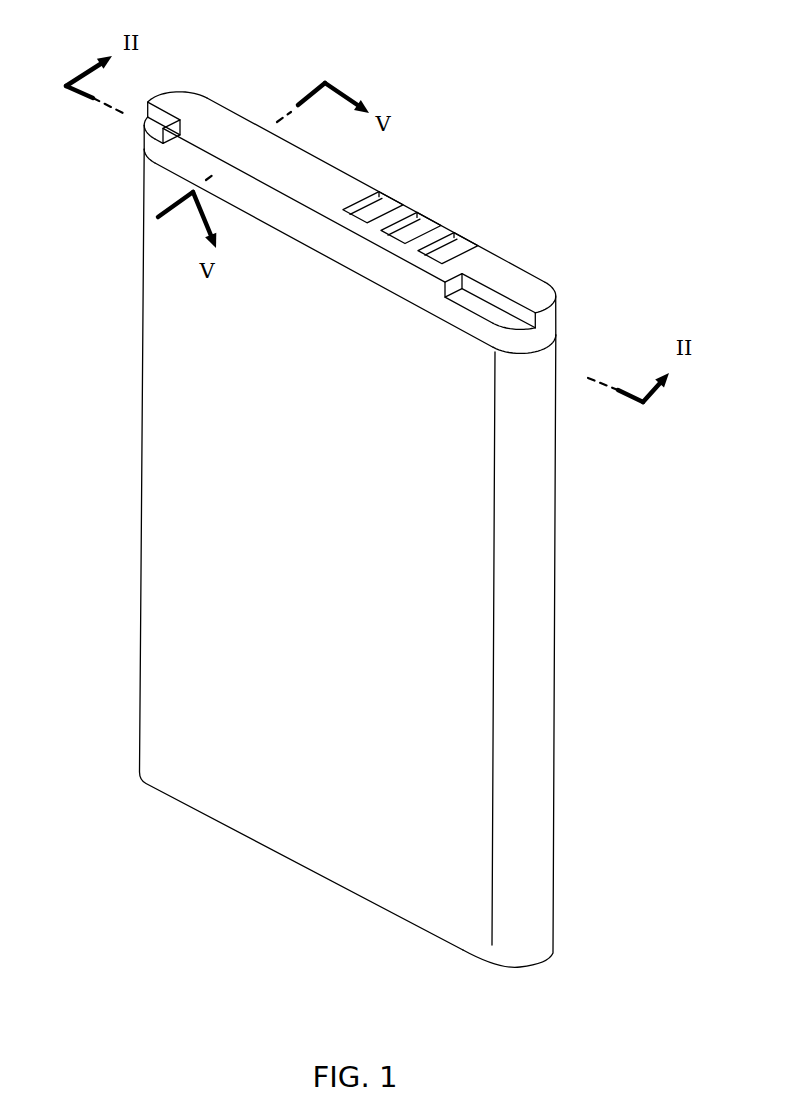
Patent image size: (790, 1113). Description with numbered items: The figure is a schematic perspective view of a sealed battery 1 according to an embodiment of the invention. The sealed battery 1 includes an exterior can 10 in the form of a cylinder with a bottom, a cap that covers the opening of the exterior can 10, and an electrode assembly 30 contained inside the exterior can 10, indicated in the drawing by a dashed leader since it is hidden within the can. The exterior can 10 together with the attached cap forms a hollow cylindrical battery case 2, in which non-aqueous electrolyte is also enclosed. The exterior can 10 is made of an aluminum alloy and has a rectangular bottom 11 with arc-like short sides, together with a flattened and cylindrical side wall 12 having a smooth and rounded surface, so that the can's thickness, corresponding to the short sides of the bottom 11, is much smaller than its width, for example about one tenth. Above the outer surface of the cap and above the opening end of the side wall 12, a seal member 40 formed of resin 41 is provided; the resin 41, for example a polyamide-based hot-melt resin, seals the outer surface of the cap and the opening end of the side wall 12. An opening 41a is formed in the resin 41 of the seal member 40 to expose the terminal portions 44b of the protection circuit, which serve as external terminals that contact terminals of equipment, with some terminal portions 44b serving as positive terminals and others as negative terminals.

The sealed battery 1 is at (585, 210).
The battery case 2 is at (570, 645).
The exterior can 10 is at (570, 893).
The bottom 11 is at (355, 902).
The side wall 12 is at (533, 735).
The electrode assembly 30 is at (247, 488).
The seal member 40 is at (211, 88).
The resin 41 is at (492, 257).
The opening 41a is at (451, 245).
The terminal portions 44b is at (418, 230).